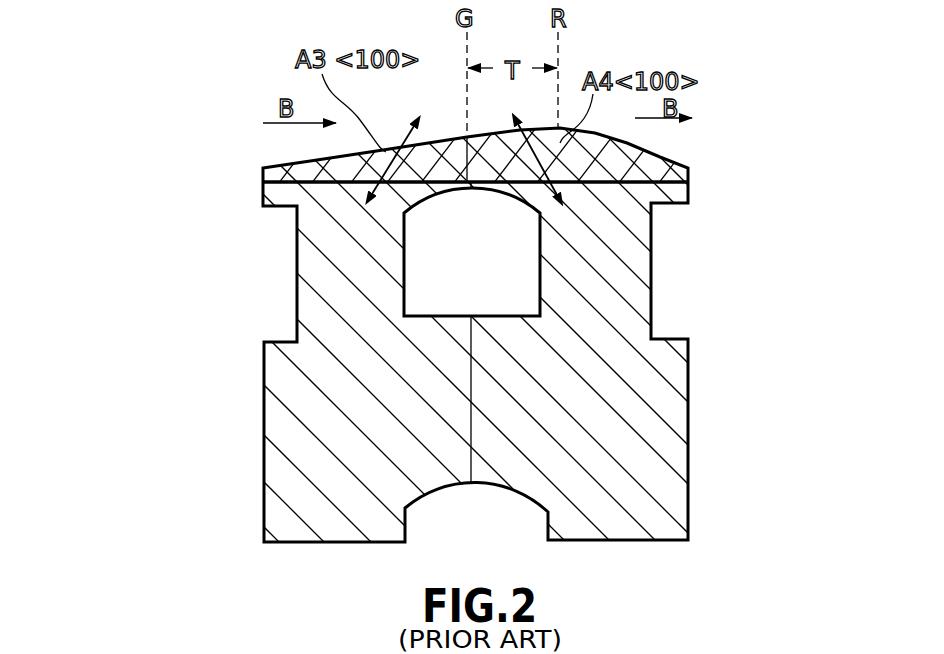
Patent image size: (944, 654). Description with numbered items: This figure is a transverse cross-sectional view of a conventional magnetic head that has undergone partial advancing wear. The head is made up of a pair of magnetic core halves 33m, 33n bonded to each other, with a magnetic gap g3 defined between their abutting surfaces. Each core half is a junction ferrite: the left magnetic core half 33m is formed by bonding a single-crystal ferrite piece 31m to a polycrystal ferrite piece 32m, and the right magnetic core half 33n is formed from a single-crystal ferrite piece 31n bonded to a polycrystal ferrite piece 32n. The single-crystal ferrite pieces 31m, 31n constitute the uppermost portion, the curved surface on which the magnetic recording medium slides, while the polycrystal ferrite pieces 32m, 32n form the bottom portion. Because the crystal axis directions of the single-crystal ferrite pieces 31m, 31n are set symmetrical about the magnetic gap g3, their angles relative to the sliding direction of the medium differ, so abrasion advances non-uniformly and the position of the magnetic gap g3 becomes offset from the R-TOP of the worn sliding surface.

The single-crystal ferrite piece 31m is at (298, 218).
The polycrystal ferrite piece 32m is at (330, 283).
The magnetic core half 33m is at (236, 222).
The single-crystal ferrite piece 31n is at (653, 206).
The polycrystal ferrite piece 32n is at (637, 261).
The magnetic core half 33n is at (750, 208).
The magnetic gap g3 is at (468, 137).